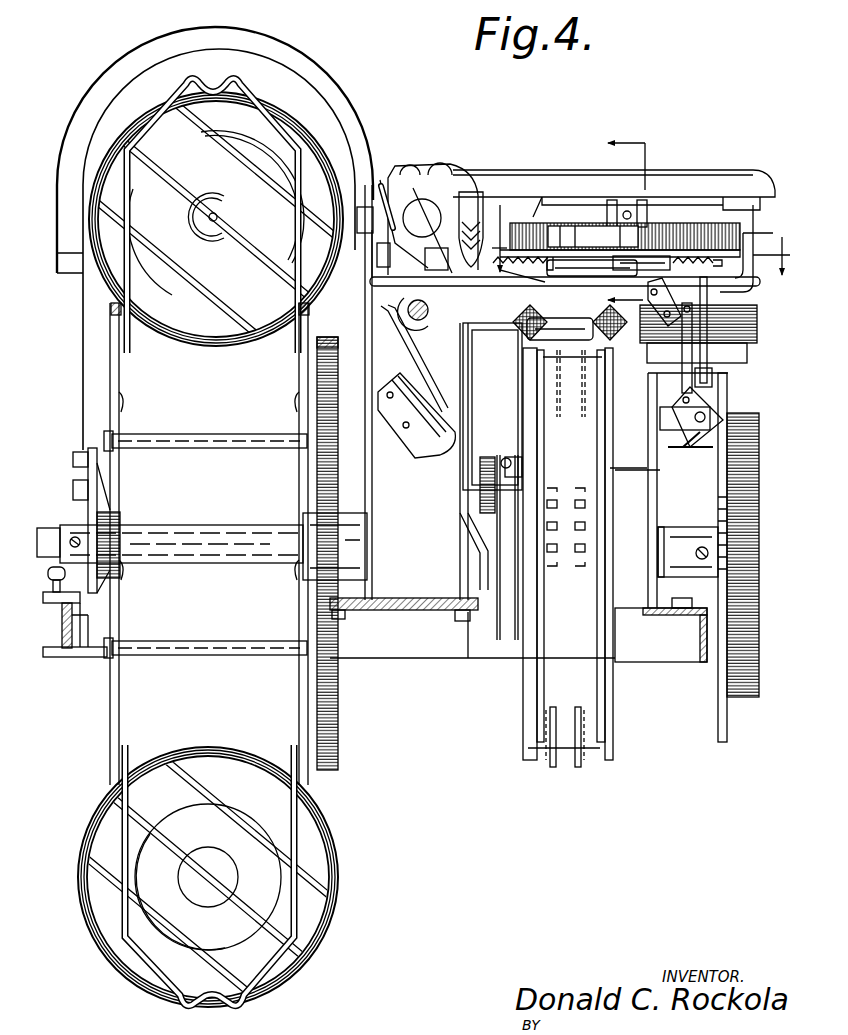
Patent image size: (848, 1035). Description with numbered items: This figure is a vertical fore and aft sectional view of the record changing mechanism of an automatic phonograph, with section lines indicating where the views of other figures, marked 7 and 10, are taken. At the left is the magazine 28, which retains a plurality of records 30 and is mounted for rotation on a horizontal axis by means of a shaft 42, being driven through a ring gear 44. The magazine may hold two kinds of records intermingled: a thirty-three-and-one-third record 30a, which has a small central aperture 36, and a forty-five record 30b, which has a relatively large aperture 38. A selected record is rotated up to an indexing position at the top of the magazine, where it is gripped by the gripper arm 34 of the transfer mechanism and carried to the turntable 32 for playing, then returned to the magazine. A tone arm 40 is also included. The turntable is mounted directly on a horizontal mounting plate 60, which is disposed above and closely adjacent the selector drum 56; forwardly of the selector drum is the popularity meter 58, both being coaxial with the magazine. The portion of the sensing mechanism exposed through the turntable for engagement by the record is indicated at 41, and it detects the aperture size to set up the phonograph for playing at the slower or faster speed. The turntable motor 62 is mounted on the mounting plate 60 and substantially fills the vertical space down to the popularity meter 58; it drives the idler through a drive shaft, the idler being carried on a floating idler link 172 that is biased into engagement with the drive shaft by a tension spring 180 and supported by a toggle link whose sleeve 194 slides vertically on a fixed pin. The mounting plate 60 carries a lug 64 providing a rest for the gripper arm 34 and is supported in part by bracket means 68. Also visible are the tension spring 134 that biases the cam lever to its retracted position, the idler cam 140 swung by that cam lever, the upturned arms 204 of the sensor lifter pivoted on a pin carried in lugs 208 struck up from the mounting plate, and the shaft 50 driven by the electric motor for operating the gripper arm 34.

The magazine 28 is at (185, 79).
The records 30 is at (279, 99).
The 33⅓ record 30a is at (292, 130).
The 45 record 30b is at (308, 938).
The turntable 32 is at (712, 222).
The gripper arm 34 is at (367, 128).
The small central aperture 36 is at (219, 218).
The large aperture 38 is at (208, 898).
The tone arm 40 is at (698, 184).
The sensing mechanism portion 41 is at (600, 203).
The shaft 42 is at (194, 525).
The ring gear 44 is at (340, 728).
The shaft 50 is at (420, 326).
The selector drum 56 is at (611, 755).
The popularity meter 58 is at (716, 750).
The mounting plate 60 is at (740, 283).
The turntable motor 62 is at (747, 354).
The lug 64 is at (763, 235).
The bracket means 68 is at (708, 352).
The tension spring 134 is at (505, 273).
The idler cam 140 is at (587, 279).
The idler link 172 is at (650, 256).
The tension spring 180 is at (704, 283).
The sleeve 194 is at (607, 257).
The upturned arms 204 is at (573, 253).
The lugs 208 is at (527, 278).
The section line 7- 7 is at (615, 225).
The section line 10- 10 is at (649, 232).